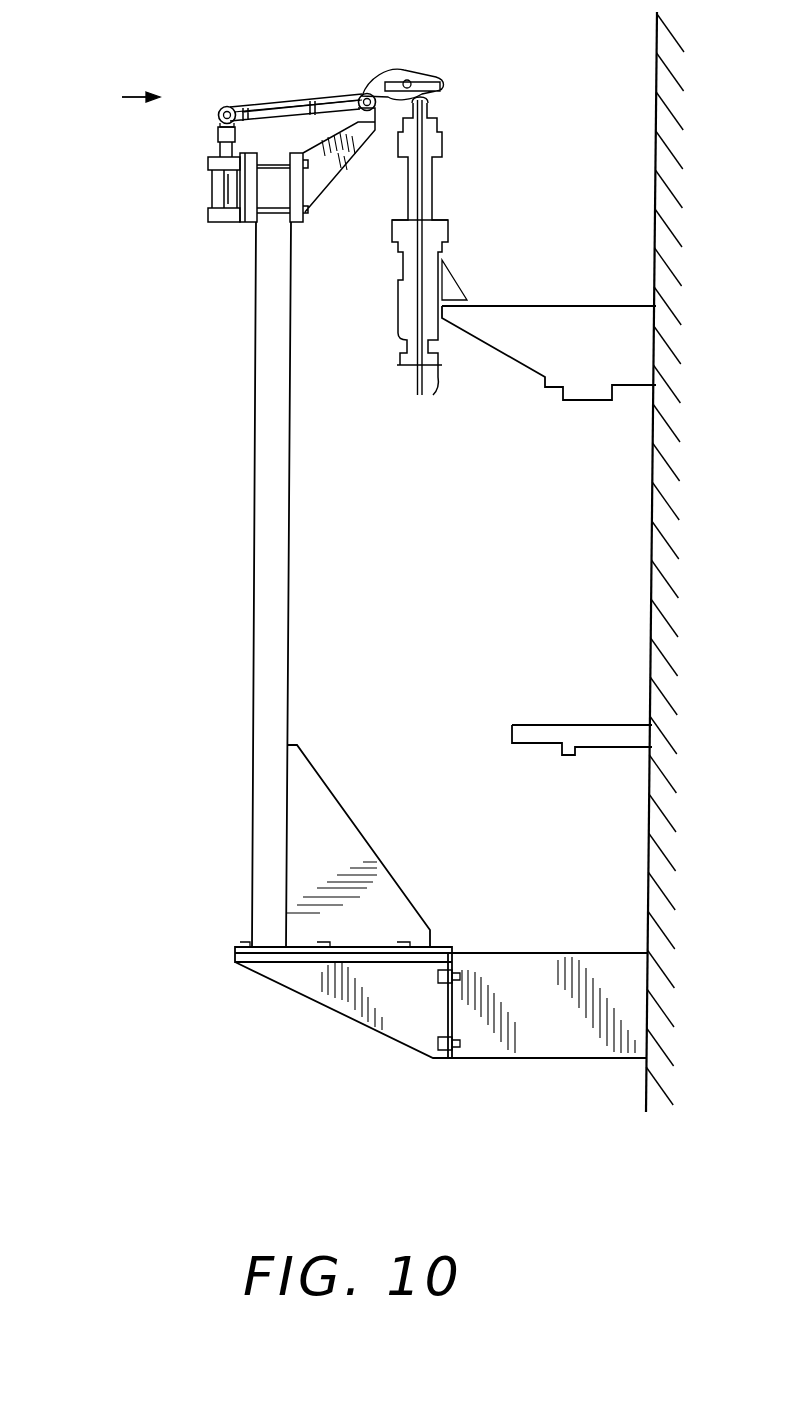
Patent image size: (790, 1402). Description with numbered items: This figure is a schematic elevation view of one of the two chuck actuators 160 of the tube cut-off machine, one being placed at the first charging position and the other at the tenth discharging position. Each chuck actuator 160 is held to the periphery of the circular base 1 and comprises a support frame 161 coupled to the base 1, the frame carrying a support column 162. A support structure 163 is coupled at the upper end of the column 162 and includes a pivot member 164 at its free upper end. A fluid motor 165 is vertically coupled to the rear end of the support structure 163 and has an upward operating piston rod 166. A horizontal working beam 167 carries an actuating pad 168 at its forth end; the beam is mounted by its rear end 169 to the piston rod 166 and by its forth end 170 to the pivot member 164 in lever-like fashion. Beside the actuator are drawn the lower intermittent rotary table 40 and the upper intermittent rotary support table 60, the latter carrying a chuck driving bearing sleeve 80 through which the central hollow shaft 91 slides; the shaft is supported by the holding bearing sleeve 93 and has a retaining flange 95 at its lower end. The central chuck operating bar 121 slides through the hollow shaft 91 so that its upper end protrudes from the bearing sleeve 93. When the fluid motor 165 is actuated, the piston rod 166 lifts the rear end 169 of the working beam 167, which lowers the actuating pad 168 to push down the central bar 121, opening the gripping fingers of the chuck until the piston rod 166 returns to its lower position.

The circular base 1 is at (554, 1034).
The lower intermittent rotary table 40 is at (598, 722).
The upper intermittent rotary support table 60 is at (570, 328).
The chuck driving bearing sleeve 80 is at (400, 283).
The central hollow shaft 91 is at (430, 197).
The holding bearing sleeve 93 is at (395, 232).
The retaining flange 95 is at (450, 395).
The central chuck operating bar 121 is at (425, 105).
The chuck actuator 160 is at (111, 101).
The support frame 161 is at (342, 852).
The support column 162 is at (289, 600).
The support structure 163 is at (324, 183).
The pivot member 164 is at (370, 92).
The fluid motor 165 is at (210, 193).
The piston rod 166 is at (220, 120).
The horizontal working beam 167 is at (282, 85).
The actuating pad 168 is at (440, 88).
The rear end of the working beam 169 is at (233, 98).
The forth end of the working beam 170 is at (318, 92).